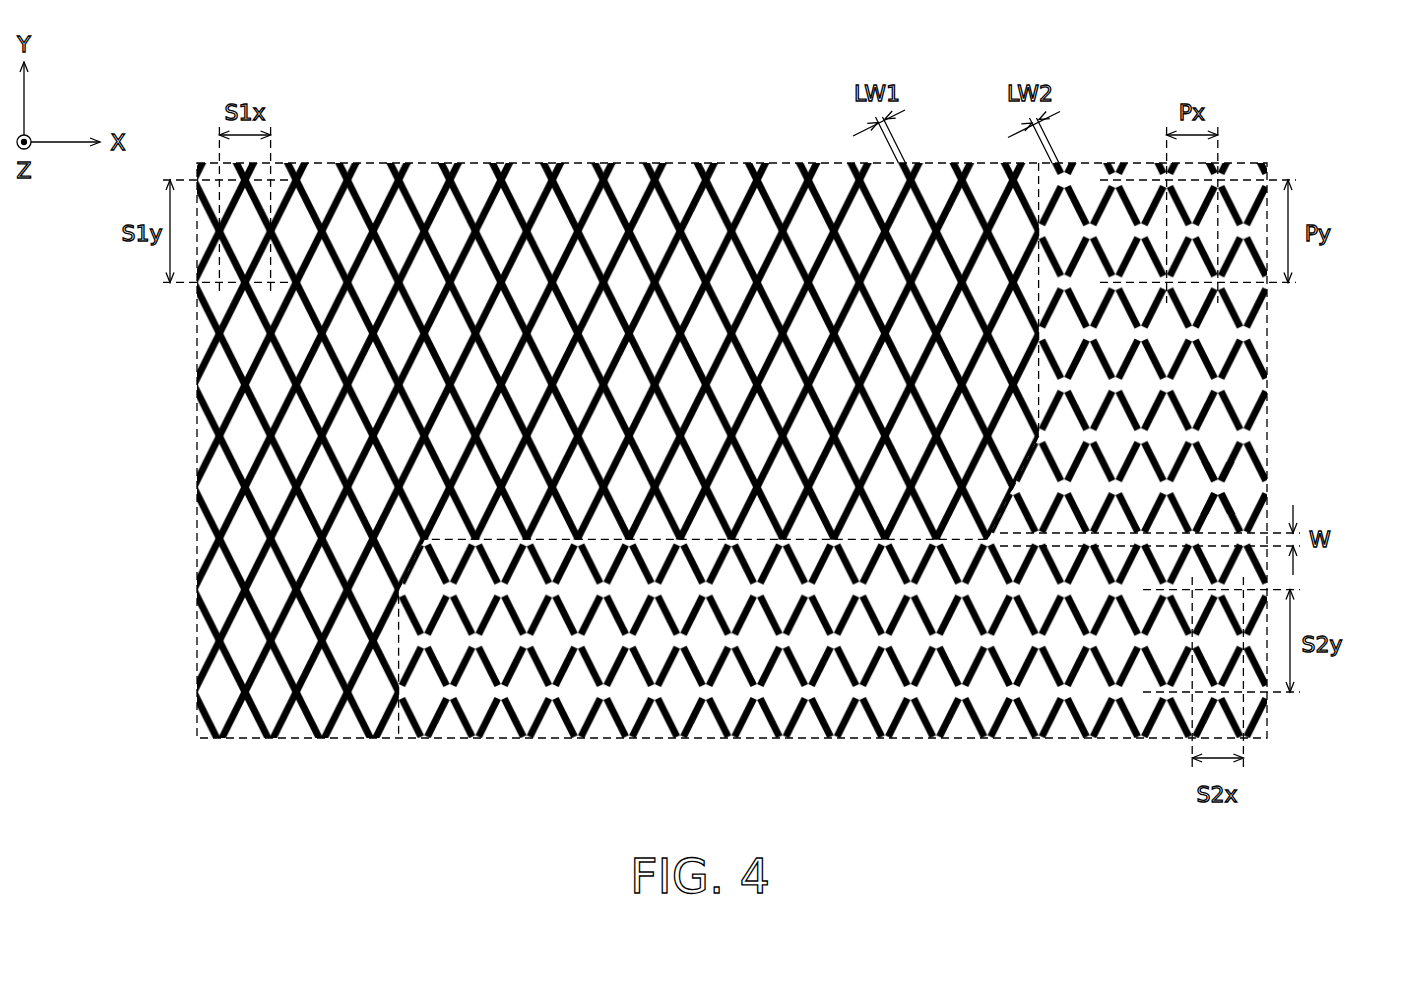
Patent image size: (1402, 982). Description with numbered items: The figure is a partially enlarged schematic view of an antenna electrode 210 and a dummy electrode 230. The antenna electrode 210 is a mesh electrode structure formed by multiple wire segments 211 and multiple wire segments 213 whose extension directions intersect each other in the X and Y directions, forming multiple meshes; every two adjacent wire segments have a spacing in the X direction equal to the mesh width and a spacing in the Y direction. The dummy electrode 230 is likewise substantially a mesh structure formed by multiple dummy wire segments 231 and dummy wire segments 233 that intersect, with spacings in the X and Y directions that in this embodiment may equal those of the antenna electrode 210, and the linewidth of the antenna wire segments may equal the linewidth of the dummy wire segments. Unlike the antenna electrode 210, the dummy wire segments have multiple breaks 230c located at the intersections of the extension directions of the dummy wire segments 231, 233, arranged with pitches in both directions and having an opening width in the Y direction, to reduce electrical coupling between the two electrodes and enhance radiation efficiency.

The antenna electrode 210 is at (618, 395).
The wire segments 211 is at (620, 185).
The wire segments 213 is at (558, 94).
The dummy electrode 230 is at (895, 450).
The dummy wire segments 231 is at (1233, 298).
The dummy wire segments 233 is at (1233, 367).
The break 230c is at (1225, 488).